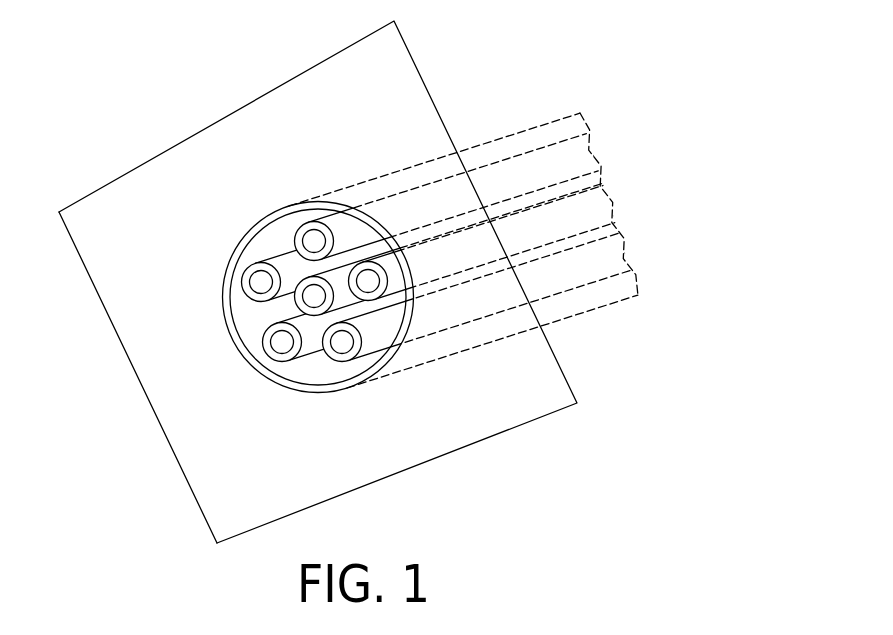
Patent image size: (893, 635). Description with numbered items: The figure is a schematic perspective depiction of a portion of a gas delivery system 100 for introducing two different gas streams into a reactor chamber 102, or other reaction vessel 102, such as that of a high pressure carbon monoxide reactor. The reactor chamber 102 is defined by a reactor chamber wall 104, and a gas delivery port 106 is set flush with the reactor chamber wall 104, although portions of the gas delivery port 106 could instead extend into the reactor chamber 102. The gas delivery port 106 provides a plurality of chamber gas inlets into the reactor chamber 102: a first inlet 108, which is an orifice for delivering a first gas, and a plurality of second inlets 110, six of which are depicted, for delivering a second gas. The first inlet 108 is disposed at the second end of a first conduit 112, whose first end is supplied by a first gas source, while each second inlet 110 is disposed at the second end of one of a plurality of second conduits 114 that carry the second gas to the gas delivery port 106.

The gas delivery system 100 is at (400, 249).
The reactor chamber 102 is at (303, 282).
The reactor chamber wall 104 is at (142, 362).
The gas delivery port 106 is at (396, 301).
The first inlet 108 is at (425, 197).
The second inlets 110 is at (313, 241).
The first conduit 112 is at (543, 123).
The second conduits 114 is at (415, 301).